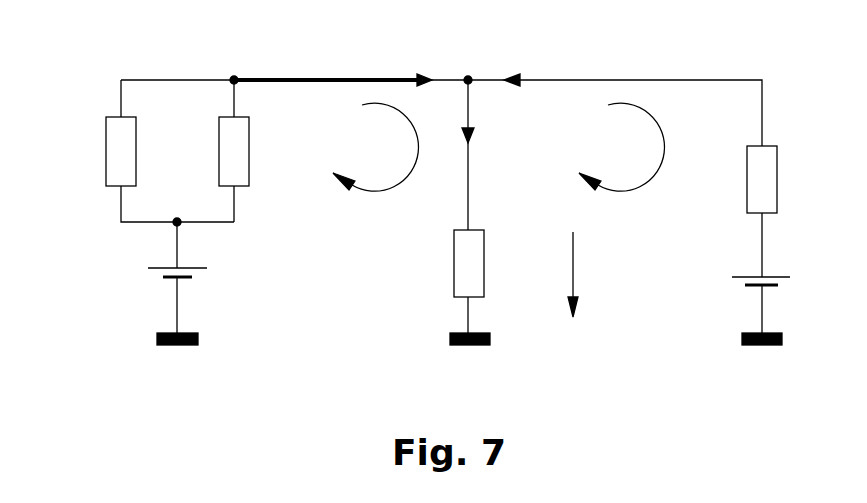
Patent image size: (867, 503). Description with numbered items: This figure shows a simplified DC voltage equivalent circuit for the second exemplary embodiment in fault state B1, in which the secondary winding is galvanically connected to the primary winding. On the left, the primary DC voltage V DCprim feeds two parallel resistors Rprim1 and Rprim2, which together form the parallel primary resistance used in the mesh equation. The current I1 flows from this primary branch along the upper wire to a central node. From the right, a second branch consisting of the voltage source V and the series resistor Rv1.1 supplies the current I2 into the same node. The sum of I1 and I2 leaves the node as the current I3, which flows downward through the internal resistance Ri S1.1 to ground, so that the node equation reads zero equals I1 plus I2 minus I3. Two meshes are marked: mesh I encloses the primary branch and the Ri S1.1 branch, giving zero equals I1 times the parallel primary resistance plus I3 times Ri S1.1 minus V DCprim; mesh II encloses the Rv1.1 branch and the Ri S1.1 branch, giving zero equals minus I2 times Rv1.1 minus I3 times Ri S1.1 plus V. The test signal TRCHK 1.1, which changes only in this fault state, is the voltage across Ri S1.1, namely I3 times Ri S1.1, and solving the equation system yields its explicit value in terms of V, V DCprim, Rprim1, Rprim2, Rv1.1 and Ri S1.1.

The primary resistor Rprim1 is at (160, 151).
The primary resistor Rprim2 is at (273, 151).
The primary DC voltage V DCprim is at (139, 250).
The current I1 is at (335, 67).
The current I2 is at (514, 67).
The current I3 is at (482, 136).
The mesh I is at (375, 147).
The mesh II is at (621, 147).
The internal resistance RiS1.1 Ri S1.1 is at (505, 287).
The test signal TRCHK1.1 TRCHK 1.1 is at (628, 274).
The series resistor Rv1.1 is at (792, 179).
The voltage V is at (808, 250).